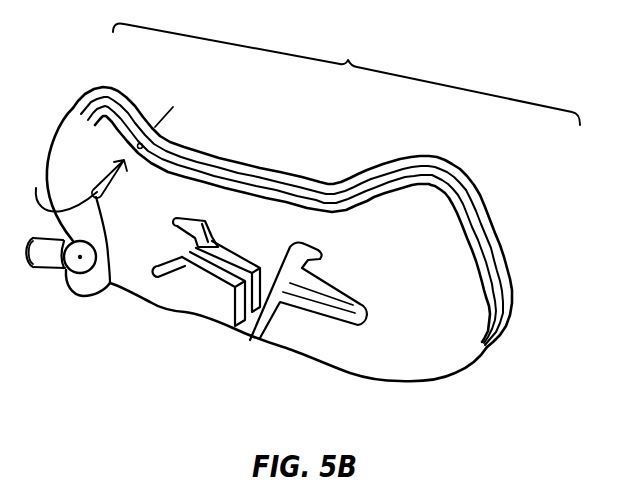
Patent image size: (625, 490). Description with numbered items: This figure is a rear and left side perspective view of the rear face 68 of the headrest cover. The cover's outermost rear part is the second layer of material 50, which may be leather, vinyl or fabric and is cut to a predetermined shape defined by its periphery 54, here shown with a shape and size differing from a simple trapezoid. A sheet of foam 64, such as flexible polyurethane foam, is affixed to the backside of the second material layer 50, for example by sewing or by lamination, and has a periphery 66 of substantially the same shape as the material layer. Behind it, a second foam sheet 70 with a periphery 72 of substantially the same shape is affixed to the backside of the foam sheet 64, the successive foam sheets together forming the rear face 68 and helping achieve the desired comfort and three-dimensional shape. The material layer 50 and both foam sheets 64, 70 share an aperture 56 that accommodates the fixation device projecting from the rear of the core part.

The second layer of material 50 is at (450, 352).
The periphery 54 is at (480, 259).
The aperture 56 is at (275, 288).
The sheet of foam 64 is at (245, 178).
The periphery 66 is at (482, 233).
The rear face 68 is at (346, 74).
The second foam sheet 70 is at (192, 158).
The periphery 72 is at (480, 198).